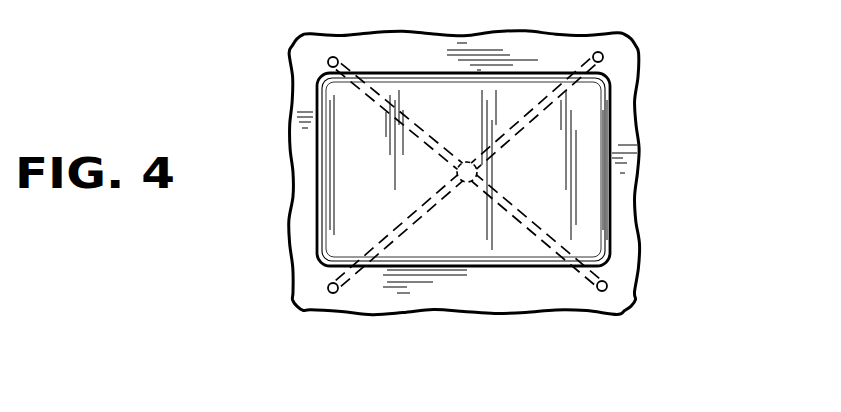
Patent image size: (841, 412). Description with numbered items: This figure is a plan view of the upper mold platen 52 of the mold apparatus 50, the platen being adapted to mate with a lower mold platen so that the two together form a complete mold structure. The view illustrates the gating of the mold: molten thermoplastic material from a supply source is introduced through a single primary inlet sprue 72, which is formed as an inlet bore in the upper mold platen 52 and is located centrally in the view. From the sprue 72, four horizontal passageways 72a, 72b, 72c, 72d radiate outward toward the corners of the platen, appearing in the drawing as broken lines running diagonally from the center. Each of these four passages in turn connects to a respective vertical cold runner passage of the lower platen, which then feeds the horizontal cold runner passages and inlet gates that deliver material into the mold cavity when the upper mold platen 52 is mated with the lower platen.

The mold apparatus 50 is at (639, 131).
The upper mold platen 52 is at (620, 62).
The primary inlet sprue 72 is at (470, 171).
The horizontal passageway 72a is at (515, 123).
The horizontal passageway 72b is at (530, 232).
The horizontal passageway 72c is at (390, 235).
The horizontal passageway 72d is at (412, 127).